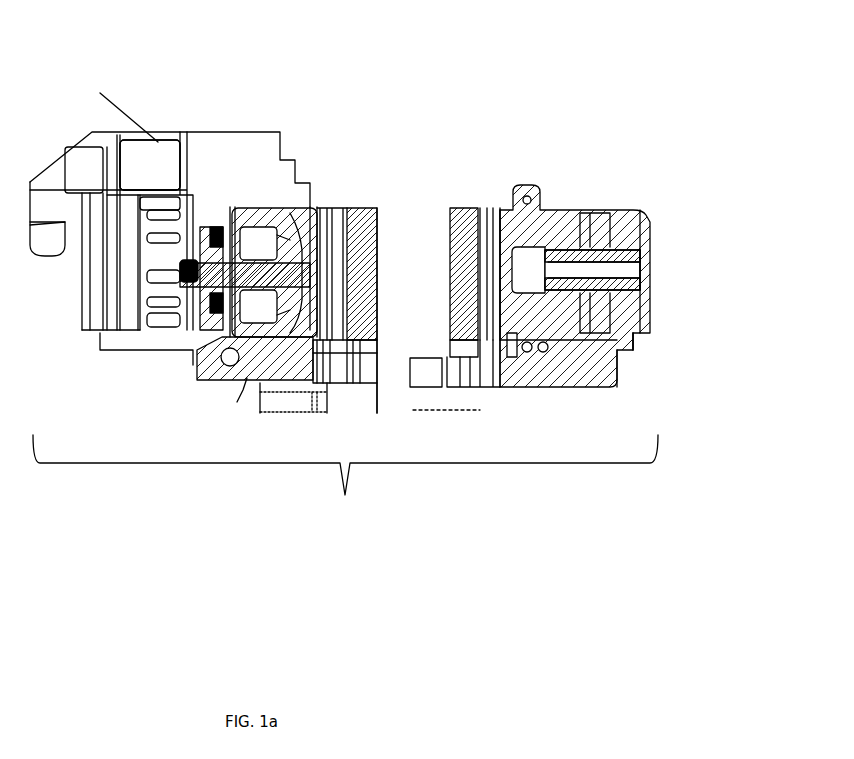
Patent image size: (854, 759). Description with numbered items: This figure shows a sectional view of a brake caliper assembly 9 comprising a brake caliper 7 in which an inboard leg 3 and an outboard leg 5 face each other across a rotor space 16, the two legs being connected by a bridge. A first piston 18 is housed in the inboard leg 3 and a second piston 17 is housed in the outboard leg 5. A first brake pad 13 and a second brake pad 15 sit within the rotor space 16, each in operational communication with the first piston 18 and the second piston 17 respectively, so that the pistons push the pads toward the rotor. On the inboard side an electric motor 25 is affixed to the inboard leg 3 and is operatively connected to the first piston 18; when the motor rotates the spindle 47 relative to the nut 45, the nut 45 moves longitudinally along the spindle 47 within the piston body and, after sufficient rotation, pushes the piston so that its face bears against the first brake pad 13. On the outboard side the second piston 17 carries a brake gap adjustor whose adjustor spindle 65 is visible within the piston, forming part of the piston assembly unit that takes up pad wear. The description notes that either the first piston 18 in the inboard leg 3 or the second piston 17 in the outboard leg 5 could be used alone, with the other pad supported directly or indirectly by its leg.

The inboard leg 3 is at (207, 376).
The electric motor 25 is at (155, 139).
The spindle 47 is at (233, 224).
The nut 45 is at (273, 197).
The first piston 18 is at (317, 208).
The first brake pad 13 is at (373, 188).
The rotor space 16 is at (425, 222).
The second brake pad 15 is at (467, 222).
The second piston 17 is at (562, 225).
The outboard leg 5 is at (650, 228).
The adjustor spindle 65 is at (595, 277).
The brake caliper 7 is at (617, 376).
The brake caliper assembly 9 is at (345, 481).